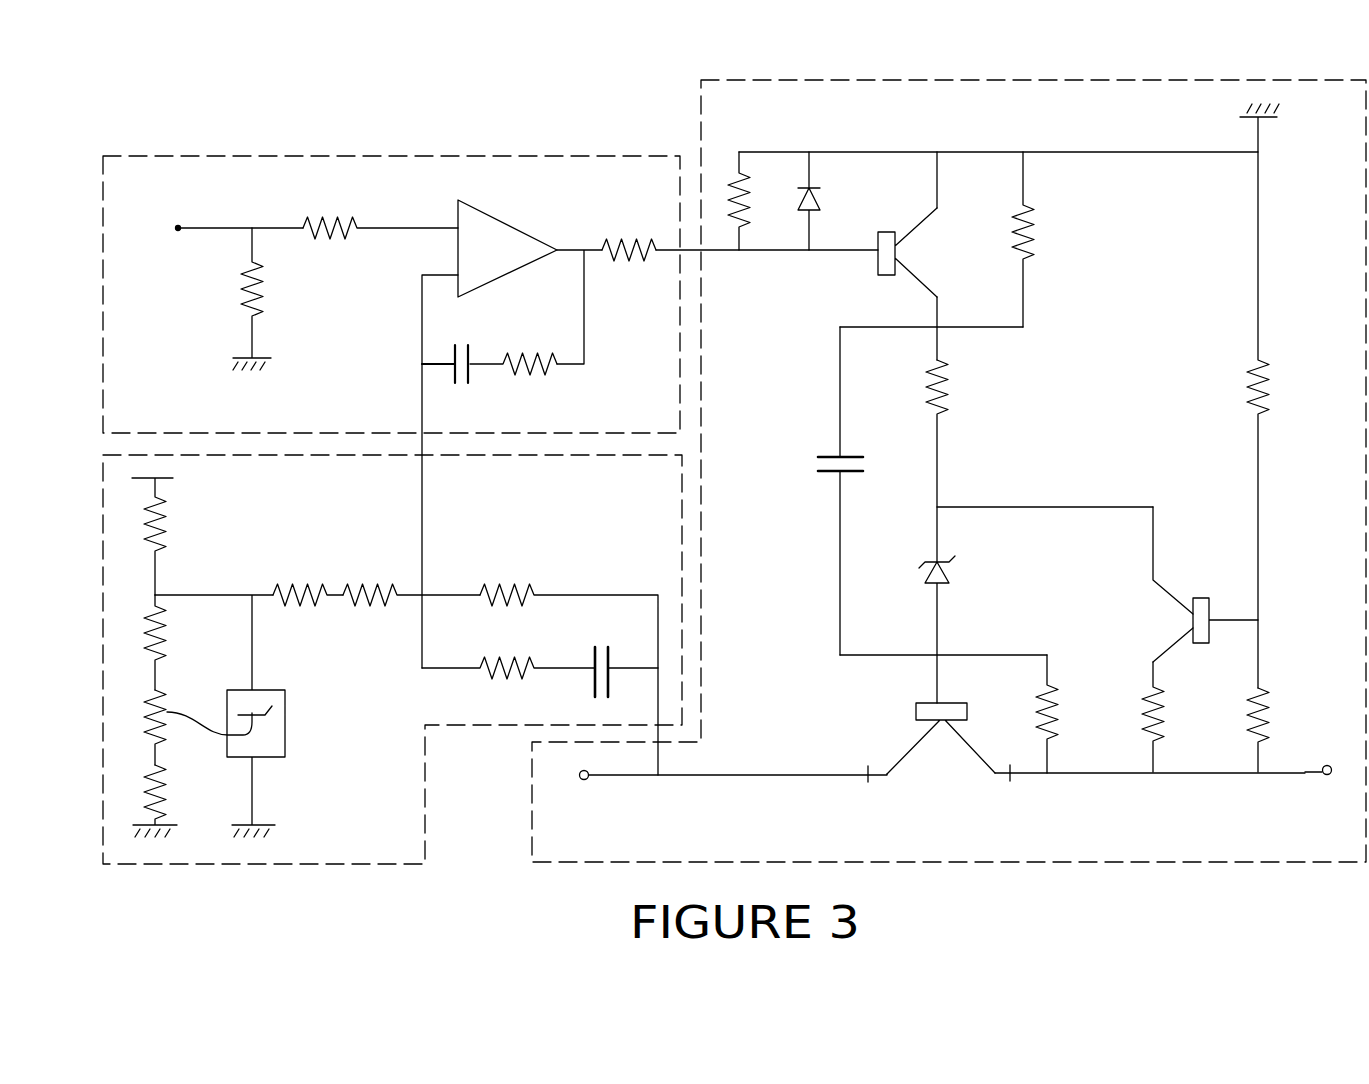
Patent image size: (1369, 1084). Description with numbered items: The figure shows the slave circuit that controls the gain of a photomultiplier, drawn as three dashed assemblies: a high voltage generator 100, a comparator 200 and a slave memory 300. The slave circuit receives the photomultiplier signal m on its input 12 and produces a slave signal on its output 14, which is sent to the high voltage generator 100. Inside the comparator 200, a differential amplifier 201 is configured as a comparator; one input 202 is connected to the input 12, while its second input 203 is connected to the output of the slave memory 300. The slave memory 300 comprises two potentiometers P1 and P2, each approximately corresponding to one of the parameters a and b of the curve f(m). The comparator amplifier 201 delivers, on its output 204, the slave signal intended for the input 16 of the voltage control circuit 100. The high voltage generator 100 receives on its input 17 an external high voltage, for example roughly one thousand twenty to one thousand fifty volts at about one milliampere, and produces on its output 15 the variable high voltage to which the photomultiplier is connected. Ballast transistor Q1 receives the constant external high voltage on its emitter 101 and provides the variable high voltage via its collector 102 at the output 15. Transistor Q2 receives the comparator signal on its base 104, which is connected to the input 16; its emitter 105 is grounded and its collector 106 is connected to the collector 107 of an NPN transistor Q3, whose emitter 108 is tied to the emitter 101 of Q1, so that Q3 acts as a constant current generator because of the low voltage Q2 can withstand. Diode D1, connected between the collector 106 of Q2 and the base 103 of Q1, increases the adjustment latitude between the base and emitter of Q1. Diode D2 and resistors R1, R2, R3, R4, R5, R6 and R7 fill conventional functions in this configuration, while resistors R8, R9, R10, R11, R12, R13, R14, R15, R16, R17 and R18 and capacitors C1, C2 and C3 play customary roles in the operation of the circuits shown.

The high voltage generator 100 is at (1133, 862).
The comparator 200 is at (313, 156).
The slave memory 300 is at (290, 864).
The input 12 is at (178, 228).
The output 14 is at (592, 250).
The output 15 is at (586, 780).
The input 16 is at (739, 250).
The input 17 is at (1324, 775).
The emitter 101 is at (1010, 781).
The collector 102 is at (868, 782).
The base 103 is at (946, 655).
The base 104 is at (809, 250).
The emitter 105 is at (938, 210).
The collector 106 is at (940, 297).
The collector 107 is at (1152, 580).
The emitter 108 is at (1152, 660).
The differential amplifier 201 is at (497, 226).
The input 202 is at (413, 228).
The second input 203 is at (422, 275).
The output 204 is at (562, 250).
The resistor R1 is at (1270, 386).
The resistor R2 is at (1272, 718).
The resistor R3 is at (1166, 718).
The resistor R4 is at (1031, 244).
The resistor R5 is at (1056, 718).
The resistor R6 is at (950, 390).
The resistor R7 is at (730, 188).
The resistor R8 is at (626, 256).
The resistor R9 is at (498, 586).
The resistor R10 is at (488, 671).
The resistor R11 is at (533, 370).
The resistor R12 is at (368, 586).
The resistor R13 is at (330, 220).
The resistor R14 is at (242, 284).
The resistor R15 is at (168, 632).
The resistor R16 is at (166, 792).
The resistor R17 is at (168, 528).
The resistor R18 is at (300, 586).
The capacitor C1 is at (822, 455).
The capacitor C2 is at (594, 670).
The capacitor C3 is at (468, 380).
The diode D1 is at (956, 554).
The diode D2 is at (818, 204).
The ballast transistor Q1 is at (914, 711).
The transistor Q2 is at (876, 262).
The NPN transistor Q3 is at (1201, 598).
The potentiometer P1 is at (181, 727).
The potentiometer P2 is at (255, 716).